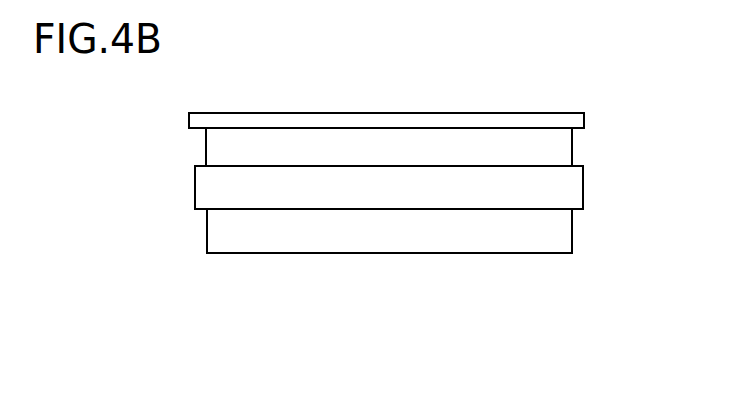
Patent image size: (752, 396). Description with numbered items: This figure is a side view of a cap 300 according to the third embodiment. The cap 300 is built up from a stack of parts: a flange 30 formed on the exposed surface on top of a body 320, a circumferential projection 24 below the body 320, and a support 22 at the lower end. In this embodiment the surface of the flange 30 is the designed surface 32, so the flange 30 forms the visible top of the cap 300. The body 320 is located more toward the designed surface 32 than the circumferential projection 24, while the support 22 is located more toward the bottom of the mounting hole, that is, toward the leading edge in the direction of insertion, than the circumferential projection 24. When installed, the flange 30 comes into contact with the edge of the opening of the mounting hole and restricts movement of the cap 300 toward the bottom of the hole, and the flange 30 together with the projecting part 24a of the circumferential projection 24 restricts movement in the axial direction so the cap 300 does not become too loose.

The cap 300 is at (364, 298).
The support 22 is at (560, 238).
The circumferential projection 24 is at (267, 185).
The projecting part 24a is at (572, 163).
The flange 30 is at (498, 122).
The designed surface 32 is at (378, 113).
The body 320 is at (543, 148).